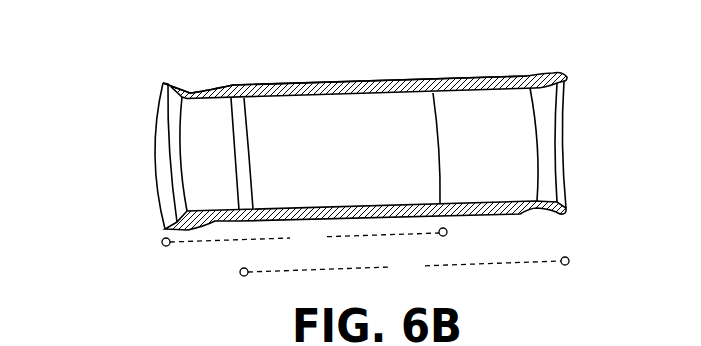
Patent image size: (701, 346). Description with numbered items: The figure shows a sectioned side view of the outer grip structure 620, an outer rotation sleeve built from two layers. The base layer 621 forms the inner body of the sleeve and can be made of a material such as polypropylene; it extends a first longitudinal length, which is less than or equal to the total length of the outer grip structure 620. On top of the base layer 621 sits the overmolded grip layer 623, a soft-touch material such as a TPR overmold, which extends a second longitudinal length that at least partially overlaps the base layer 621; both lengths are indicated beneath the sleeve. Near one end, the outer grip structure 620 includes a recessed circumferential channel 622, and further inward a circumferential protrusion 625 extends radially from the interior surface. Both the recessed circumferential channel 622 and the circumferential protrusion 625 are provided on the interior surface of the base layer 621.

The outer grip structure 620 is at (124, 66).
The base layer 621 is at (207, 91).
The recessed circumferential channel 622 is at (173, 173).
The overmolded grip layer 623 is at (482, 78).
The circumferential protrusion 625 is at (238, 168).